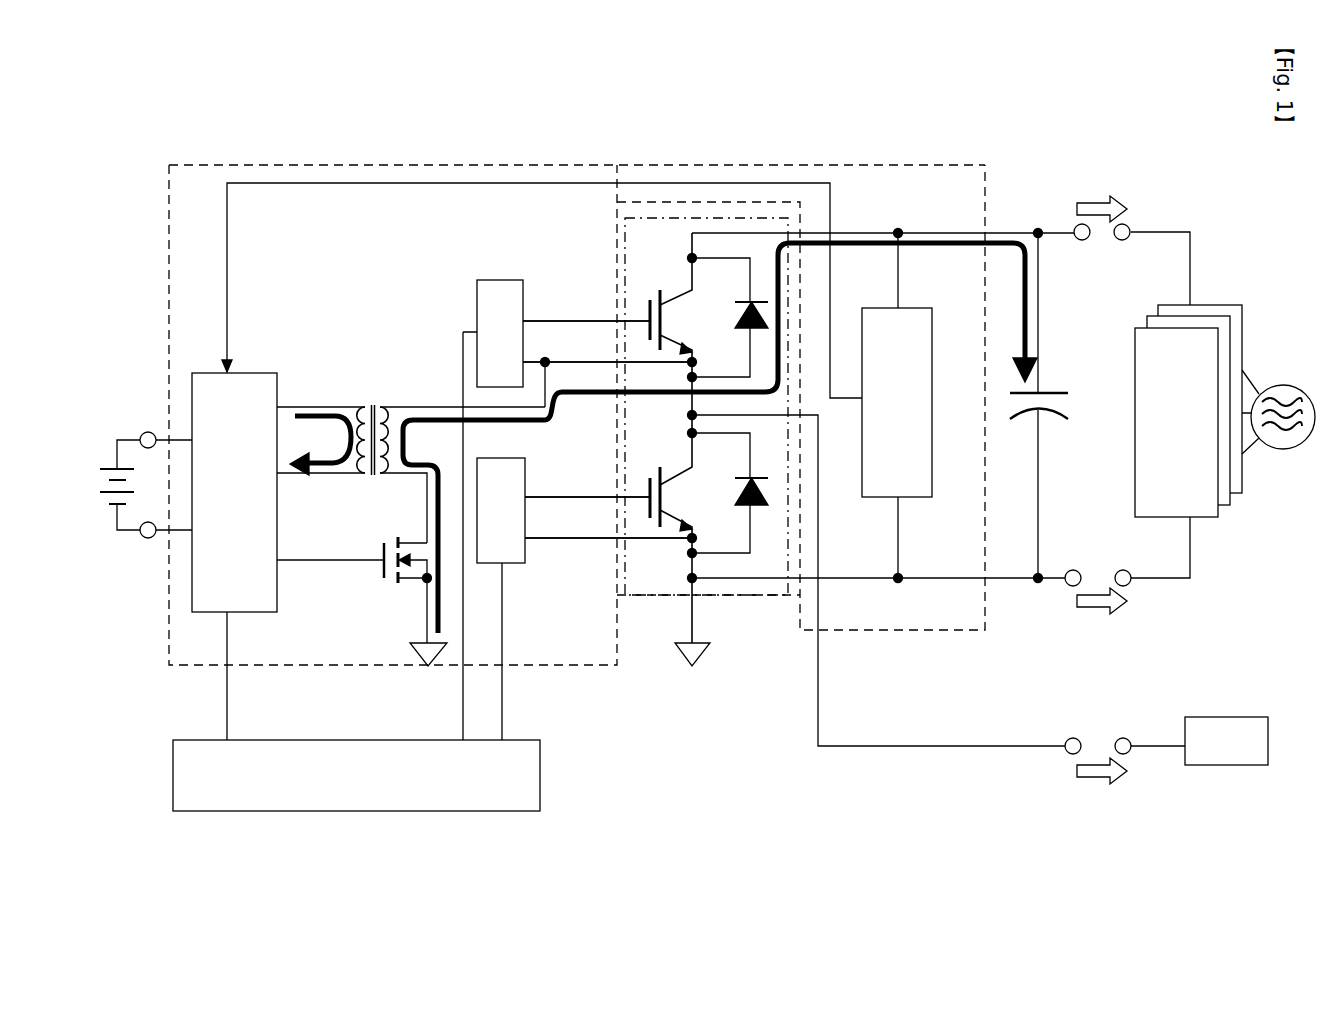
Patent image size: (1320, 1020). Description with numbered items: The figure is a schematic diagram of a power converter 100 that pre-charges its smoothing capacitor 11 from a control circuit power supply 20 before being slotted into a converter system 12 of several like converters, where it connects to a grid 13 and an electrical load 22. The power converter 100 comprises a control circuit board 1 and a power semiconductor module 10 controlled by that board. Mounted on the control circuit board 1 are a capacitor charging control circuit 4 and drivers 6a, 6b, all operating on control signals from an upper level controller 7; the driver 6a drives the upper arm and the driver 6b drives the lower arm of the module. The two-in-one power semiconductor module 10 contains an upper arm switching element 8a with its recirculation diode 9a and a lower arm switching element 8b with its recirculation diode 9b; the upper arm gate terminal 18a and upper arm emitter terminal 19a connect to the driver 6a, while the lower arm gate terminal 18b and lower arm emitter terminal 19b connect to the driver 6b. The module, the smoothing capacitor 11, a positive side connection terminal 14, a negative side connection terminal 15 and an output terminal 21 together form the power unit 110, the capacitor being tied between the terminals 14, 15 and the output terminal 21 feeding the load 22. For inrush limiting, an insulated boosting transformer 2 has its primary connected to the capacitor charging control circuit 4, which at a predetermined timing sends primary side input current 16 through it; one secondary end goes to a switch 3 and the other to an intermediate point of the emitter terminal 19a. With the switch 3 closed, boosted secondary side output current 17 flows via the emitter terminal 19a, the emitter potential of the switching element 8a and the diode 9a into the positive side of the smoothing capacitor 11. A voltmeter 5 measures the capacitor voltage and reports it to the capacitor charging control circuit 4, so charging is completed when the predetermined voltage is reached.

The control circuit board 1 is at (213, 165).
The transformer 2 is at (373, 400).
The switch 3 is at (393, 582).
The capacitor charging control circuit 4 is at (248, 373).
The voltmeter 5 is at (915, 497).
The driver of the upper arm 6a is at (483, 280).
The driver of the lower arm 6b is at (513, 565).
The upper level controller 7 is at (540, 768).
The switching element of the upper arm 8a is at (683, 300).
The switching element of the lower arm 8b is at (675, 522).
The diode of the upper arm 9a is at (735, 300).
The diode of the lower arm 9b is at (753, 507).
The power semiconductor module 10 is at (733, 595).
The smoothing capacitor 11 is at (1018, 416).
The converter system 12 is at (1213, 390).
The grid 13 is at (1287, 385).
The positive side connection terminal 14 is at (1080, 241).
The negative side connection terminal 15 is at (1073, 569).
The primary side input current 16 is at (335, 466).
The secondary side output current 17 is at (953, 253).
The upper arm gate terminal 18a is at (583, 318).
The lower arm gate terminal 18b is at (586, 487).
The upper arm emitter terminal 19a is at (600, 358).
The lower arm emitter terminal 19b is at (585, 548).
The control circuit power supply 20 is at (104, 467).
The output terminal 21 is at (1072, 737).
The electrical load 22 is at (1222, 716).
The power converter 100 is at (385, 120).
The power unit 110 is at (617, 67).